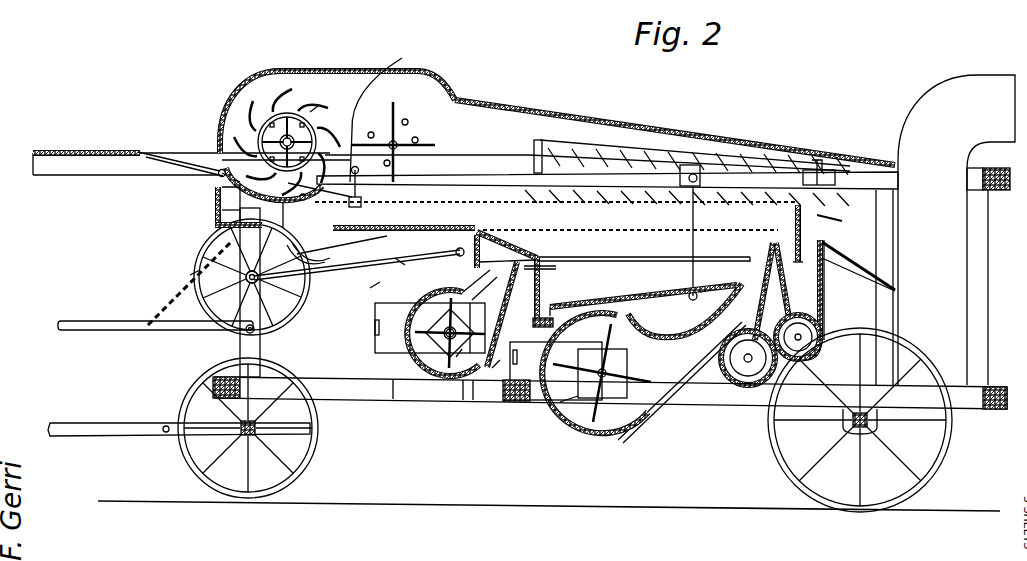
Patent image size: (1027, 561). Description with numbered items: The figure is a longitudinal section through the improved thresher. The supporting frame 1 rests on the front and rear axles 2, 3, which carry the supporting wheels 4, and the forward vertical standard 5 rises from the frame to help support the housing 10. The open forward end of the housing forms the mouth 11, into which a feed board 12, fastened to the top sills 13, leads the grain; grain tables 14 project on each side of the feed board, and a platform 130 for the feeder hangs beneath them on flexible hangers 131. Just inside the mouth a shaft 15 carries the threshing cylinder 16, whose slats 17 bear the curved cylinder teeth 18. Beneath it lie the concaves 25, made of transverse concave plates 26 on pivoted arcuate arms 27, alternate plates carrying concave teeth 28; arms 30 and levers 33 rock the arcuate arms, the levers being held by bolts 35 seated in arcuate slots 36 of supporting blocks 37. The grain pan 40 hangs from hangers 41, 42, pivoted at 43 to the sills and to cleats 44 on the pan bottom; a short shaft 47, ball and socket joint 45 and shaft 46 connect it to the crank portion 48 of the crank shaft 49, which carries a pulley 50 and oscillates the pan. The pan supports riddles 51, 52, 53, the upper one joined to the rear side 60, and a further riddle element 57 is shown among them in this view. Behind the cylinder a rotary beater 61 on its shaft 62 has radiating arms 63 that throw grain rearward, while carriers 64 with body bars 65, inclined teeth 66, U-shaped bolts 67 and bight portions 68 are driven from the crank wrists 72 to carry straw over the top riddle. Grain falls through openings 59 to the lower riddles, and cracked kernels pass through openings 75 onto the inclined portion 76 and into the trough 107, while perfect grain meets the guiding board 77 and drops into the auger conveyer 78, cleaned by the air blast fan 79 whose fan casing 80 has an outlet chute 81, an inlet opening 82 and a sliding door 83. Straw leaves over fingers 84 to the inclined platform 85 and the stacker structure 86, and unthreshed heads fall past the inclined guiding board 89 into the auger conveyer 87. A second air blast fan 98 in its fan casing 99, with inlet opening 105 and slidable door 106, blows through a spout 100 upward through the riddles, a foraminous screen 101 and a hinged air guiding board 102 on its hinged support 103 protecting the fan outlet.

The supporting frame 1 is at (419, 406).
The front axle 2 is at (262, 440).
The rear axle 3 is at (848, 422).
The supporting wheels 4 is at (312, 430).
The forward vertical standard 5 is at (262, 347).
The housing 10 is at (480, 116).
The mouth 11 is at (217, 122).
The feed board 12 is at (176, 162).
The top sills 13 is at (99, 166).
The grain tables 14 is at (57, 152).
The shaft 15 is at (284, 140).
The threshing cylinder 16 is at (310, 112).
The slats 17 is at (322, 122).
The cylinder teeth 18 is at (302, 88).
The concaves 25 is at (240, 210).
The concave plates 26 is at (285, 184).
The arcuate arms 27 is at (225, 221).
The concave teeth 28 is at (218, 159).
The arms 30 is at (217, 200).
The levers 33 is at (362, 205).
The bolts 35 is at (335, 275).
The arcuate slots 36 is at (340, 255).
The supporting blocks 37 is at (287, 281).
The grain pan 40 is at (380, 240).
The hanger 41 is at (384, 112).
The hanger 42 is at (697, 192).
The pivotal connection 43 is at (405, 175).
The cleats 44 is at (400, 227).
The ball and socket joint 45 is at (458, 256).
The shaft 46 is at (372, 290).
The short shaft 47 is at (400, 262).
The crank portion 48 is at (246, 280).
The crank shaft 49 is at (245, 331).
The pulley 50 is at (190, 277).
The riddle 51 is at (779, 233).
The riddle 52 is at (792, 278).
The riddle 53 is at (640, 262).
The chain 57 is at (580, 231).
The openings 59 is at (505, 204).
The rear side 60 is at (805, 236).
The rotary beater 61 is at (398, 143).
The shaft 62 is at (408, 126).
The radiating arms 63 is at (420, 146).
The carriers 64 is at (633, 148).
The body bars 65 is at (588, 150).
The teeth 66 is at (618, 170).
The U-shaped bolts 67 is at (820, 163).
The bight portions 68 is at (806, 170).
The wrists 72 is at (427, 153).
The openings 75 is at (610, 257).
The inclined portion 76 is at (592, 304).
The guiding board 77 is at (800, 311).
The auger conveyer 78 is at (745, 362).
The air blast fan 79 is at (548, 140).
The fan casing 80 is at (640, 432).
The outlet chute 81 is at (690, 342).
The inlet opening 82 is at (545, 380).
The sliding door 83 is at (494, 372).
The fingers 84 is at (820, 212).
The inclined platform 85 is at (880, 270).
The stacker structure 86 is at (947, 308).
The auger conveyer 87 is at (796, 341).
The inclined guiding board 89 is at (826, 303).
The air blast fan 98 is at (446, 340).
The fan casing 99 is at (458, 360).
The spout 100 is at (539, 323).
The foraminous screen 101 is at (530, 250).
The air guiding board 102 is at (508, 244).
The hinged support 103 is at (472, 300).
The inlet opening 105 is at (472, 355).
The slidable door 106 is at (395, 355).
The trough 107 is at (540, 400).
The platform 130 is at (104, 331).
The flexible hangers 131 is at (165, 305).